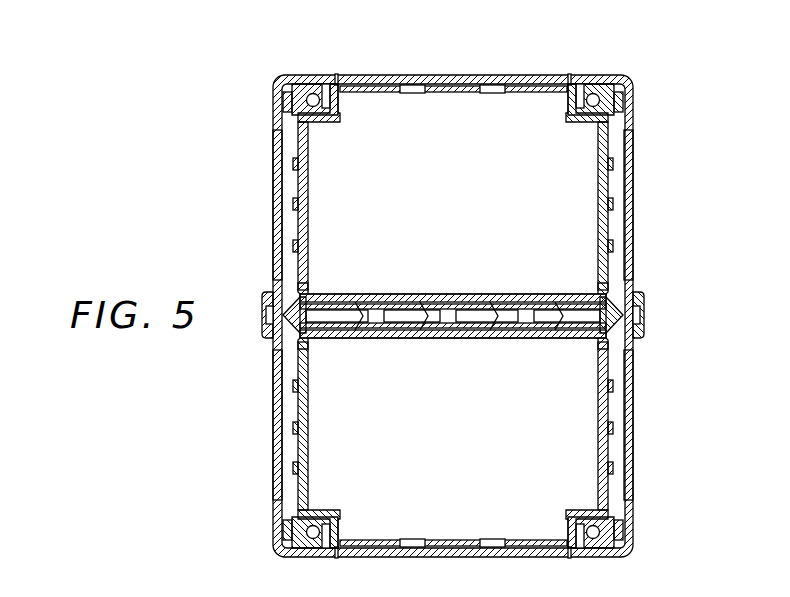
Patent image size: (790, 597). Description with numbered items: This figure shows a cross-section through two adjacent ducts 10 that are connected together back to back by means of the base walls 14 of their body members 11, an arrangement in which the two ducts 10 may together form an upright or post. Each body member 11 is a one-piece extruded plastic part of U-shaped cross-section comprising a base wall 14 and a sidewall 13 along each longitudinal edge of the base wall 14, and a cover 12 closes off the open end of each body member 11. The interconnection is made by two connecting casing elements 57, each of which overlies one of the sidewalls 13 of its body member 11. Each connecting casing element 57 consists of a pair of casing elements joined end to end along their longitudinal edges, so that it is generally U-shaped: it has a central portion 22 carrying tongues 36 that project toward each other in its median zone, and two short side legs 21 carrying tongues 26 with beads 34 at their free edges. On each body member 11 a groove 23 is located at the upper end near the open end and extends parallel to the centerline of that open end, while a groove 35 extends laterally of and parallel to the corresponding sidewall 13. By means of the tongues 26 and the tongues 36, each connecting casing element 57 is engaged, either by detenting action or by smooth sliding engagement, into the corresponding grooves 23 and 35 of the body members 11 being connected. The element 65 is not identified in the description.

The duct 10 is at (543, 72).
The body member 11 is at (616, 190).
The cover 12 is at (387, 74).
The sidewall 13 is at (512, 560).
The base wall 14 is at (456, 293).
The short side leg 21 is at (308, 84).
The central portion 22 is at (275, 215).
The groove 23 is at (314, 120).
The tongue 26 is at (310, 100).
The bead 34 is at (292, 105).
The groove 35 is at (308, 302).
The tongue 36 is at (308, 285).
The connecting casing element 57 is at (271, 73).
The knob 65 is at (262, 315).